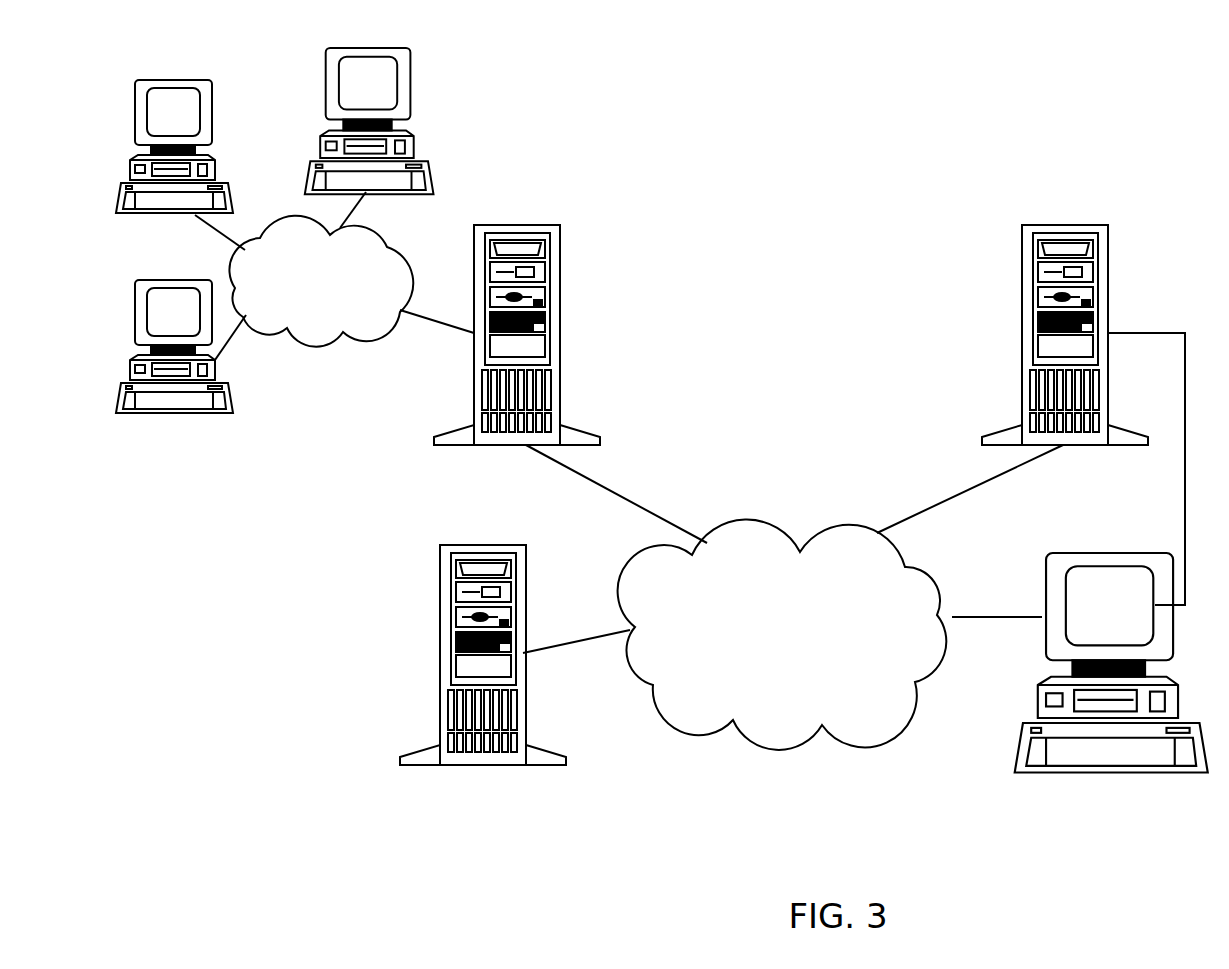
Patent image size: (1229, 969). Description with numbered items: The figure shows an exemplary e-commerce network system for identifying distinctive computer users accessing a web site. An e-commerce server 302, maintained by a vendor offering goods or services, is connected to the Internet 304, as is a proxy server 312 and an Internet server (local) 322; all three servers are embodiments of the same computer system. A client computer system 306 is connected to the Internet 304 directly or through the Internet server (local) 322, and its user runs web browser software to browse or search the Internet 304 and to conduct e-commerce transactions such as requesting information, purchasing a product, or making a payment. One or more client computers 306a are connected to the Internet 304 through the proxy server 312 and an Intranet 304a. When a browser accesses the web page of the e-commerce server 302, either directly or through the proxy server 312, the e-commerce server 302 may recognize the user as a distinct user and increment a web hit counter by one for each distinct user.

The client computers 306a is at (275, 211).
The Intranet 304a is at (297, 307).
The proxy server 312 is at (461, 335).
The Internet server (local) 322 is at (1005, 335).
The e-commerce server 302 is at (482, 684).
The Internet 304 is at (769, 662).
The client computer system 306 is at (1111, 718).